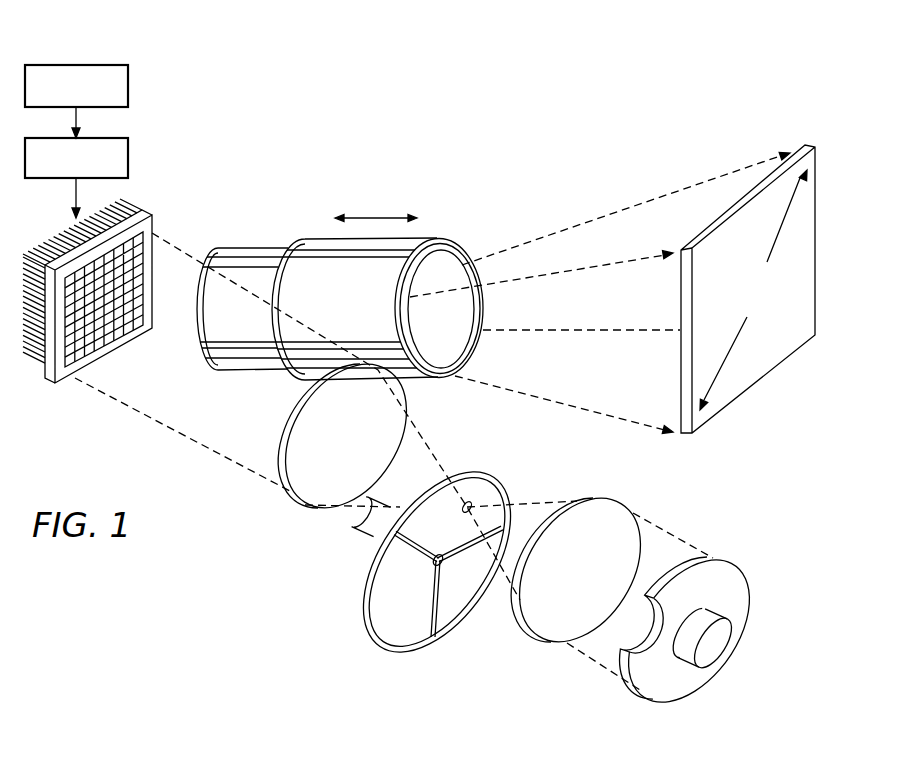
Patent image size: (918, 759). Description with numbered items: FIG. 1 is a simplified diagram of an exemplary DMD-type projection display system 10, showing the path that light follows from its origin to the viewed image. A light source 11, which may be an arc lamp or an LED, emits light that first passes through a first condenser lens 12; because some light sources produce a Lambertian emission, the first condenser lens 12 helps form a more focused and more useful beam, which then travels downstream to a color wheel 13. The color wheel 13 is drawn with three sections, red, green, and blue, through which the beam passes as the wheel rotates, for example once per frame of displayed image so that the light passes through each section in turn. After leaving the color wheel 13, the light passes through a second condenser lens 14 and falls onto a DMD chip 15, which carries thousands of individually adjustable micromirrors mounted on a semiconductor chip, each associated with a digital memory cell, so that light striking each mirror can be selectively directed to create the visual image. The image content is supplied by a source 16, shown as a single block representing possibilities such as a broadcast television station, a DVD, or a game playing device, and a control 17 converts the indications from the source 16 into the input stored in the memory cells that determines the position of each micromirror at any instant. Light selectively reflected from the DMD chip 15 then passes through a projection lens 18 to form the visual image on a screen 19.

The display system 10 is at (780, 528).
The light source 11 is at (682, 693).
The first condenser lens 12 is at (565, 628).
The color wheel 13 is at (402, 648).
The second condenser lens 14 is at (285, 462).
The DMD chip 15 is at (53, 385).
The source 16 is at (128, 86).
The control 17 is at (128, 157).
The projection lens 18 is at (358, 308).
The screen 19 is at (755, 372).